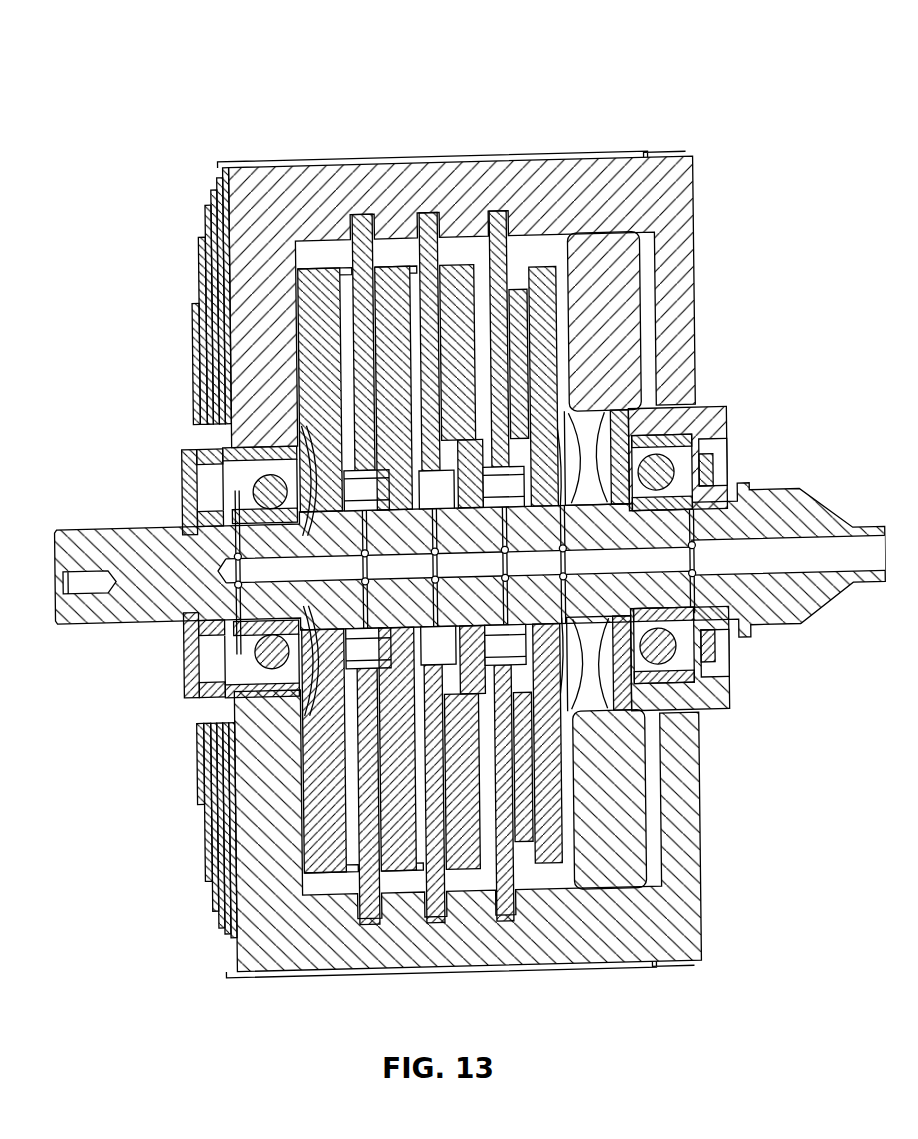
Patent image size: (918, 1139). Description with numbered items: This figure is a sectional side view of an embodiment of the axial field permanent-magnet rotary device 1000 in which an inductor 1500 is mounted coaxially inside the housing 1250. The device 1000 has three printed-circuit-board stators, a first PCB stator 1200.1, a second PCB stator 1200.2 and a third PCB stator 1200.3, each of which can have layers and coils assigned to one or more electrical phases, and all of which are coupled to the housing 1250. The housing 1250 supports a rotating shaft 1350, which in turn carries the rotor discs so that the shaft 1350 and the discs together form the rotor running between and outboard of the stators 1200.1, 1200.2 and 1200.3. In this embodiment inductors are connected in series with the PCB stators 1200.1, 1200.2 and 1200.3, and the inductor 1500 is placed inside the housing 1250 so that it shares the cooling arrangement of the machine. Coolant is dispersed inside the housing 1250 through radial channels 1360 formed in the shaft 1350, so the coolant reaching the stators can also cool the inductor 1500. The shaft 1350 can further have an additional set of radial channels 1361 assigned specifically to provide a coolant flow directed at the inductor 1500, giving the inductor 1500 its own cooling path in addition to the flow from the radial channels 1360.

The axial field PM rotary device 1000 is at (457, 495).
The housing 1250 is at (276, 223).
The first PCB stator 1200.1 is at (362, 408).
The second PCB stator 1200.2 is at (440, 445).
The third PCB stator 1200.3 is at (503, 329).
The inductor 1500 is at (614, 356).
The shaft 1350 is at (85, 519).
The radial channels 1360 is at (355, 537).
The additional radial channels 1361 is at (578, 530).